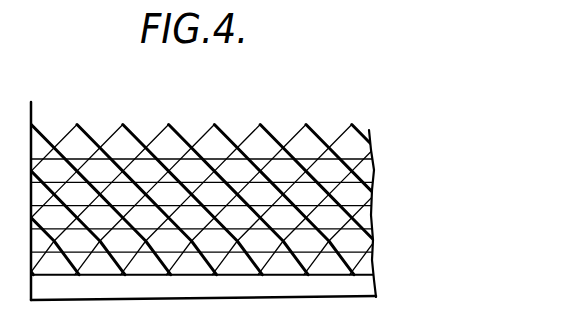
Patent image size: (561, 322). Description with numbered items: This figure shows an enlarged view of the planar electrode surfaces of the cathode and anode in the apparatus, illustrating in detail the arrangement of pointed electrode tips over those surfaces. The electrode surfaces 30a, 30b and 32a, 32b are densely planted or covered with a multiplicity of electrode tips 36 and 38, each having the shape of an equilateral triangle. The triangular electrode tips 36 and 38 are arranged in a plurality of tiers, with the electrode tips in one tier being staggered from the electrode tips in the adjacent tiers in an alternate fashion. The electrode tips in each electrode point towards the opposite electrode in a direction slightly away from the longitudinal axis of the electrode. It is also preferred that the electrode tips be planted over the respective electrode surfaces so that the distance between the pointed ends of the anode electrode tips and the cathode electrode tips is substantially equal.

The electrode tips 36 is at (268, 177).
The electrode tips 38 is at (214, 124).
The electrode surface 30a is at (273, 201).
The electrode surface 30b is at (273, 201).
The electrode surface 32a is at (272, 201).
The electrode surface 32b is at (373, 213).